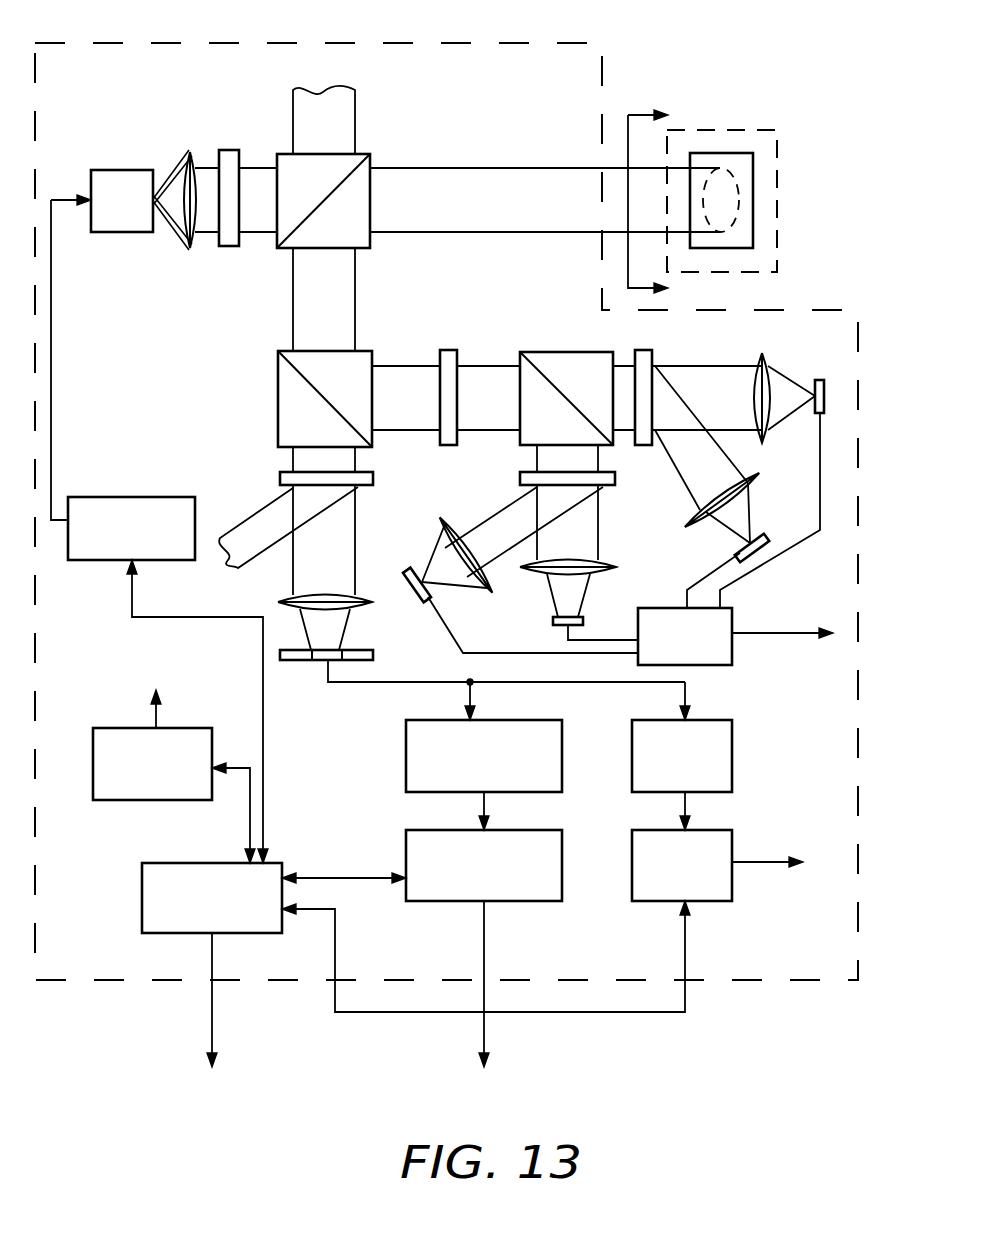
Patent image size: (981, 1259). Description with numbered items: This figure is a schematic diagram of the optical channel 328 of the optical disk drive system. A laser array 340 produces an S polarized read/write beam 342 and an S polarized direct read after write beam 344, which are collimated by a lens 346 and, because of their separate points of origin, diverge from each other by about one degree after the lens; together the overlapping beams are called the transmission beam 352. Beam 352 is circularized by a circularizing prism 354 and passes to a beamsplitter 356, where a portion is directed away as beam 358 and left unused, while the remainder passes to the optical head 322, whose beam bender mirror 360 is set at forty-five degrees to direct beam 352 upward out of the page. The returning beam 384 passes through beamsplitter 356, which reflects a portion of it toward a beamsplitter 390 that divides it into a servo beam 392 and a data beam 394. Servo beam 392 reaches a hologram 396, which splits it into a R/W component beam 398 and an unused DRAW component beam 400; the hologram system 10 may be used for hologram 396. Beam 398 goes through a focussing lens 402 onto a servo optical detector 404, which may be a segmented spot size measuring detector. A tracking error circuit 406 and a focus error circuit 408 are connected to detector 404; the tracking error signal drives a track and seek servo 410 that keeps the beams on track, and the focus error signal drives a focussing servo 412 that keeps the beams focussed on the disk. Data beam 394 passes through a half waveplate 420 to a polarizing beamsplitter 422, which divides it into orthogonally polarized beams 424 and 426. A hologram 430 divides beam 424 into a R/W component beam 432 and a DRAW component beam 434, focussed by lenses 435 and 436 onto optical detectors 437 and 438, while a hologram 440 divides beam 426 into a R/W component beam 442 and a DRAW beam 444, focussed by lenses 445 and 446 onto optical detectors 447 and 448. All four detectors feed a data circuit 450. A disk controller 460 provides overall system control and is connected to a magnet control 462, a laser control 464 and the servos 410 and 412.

The hologram system 10 is at (648, 190).
The optical head 322 is at (722, 181).
The optical channel 328 is at (446, 496).
The laser array 340 is at (122, 175).
The read/write beam 342 is at (173, 177).
The direct read after write beam 344 is at (154, 205).
The lens 346 is at (227, 176).
The transmission beam 352 is at (452, 207).
The circularizing prism 354 is at (261, 263).
The beamsplitter 356 is at (347, 174).
The beam 358 is at (358, 109).
The beam bender mirror 360 is at (758, 181).
The beam 384 is at (474, 413).
The beamsplitter 390 is at (293, 399).
The servo beam 392 is at (235, 440).
The data beam 394 is at (446, 372).
The hologram 396 is at (277, 467).
The R/W component beam 398 is at (393, 497).
The DRAW component beam 400 is at (261, 521).
The focussing lens 402 is at (347, 623).
The servo optical detector 404 is at (485, 685).
The tracking error circuit 406 is at (515, 764).
The focus error circuit 408 is at (713, 757).
The track and seek servo 410 is at (515, 965).
The focussing servo 412 is at (722, 875).
The half waveplate 420 is at (449, 370).
The polarizing beamsplitter 422 is at (506, 335).
The beam 424 is at (531, 456).
The beam 426 is at (569, 383).
The hologram 430 is at (592, 488).
The R/W component beam 432 is at (598, 522).
The DRAW component beam 434 is at (519, 532).
The lens 435 is at (589, 576).
The lens 436 is at (441, 554).
The optical detector 437 is at (571, 631).
The optical detector 438 is at (520, 610).
The hologram 440 is at (645, 412).
The R/W component beam 442 is at (687, 381).
The DRAW beam 444 is at (701, 464).
The lens 445 is at (785, 382).
The lens 446 is at (744, 506).
The optical detector 447 is at (772, 476).
The optical detector 448 is at (742, 555).
The data circuit 450 is at (719, 624).
The disk controller 460 is at (416, 983).
The magnet control 462 is at (174, 752).
The laser control 464 is at (168, 680).